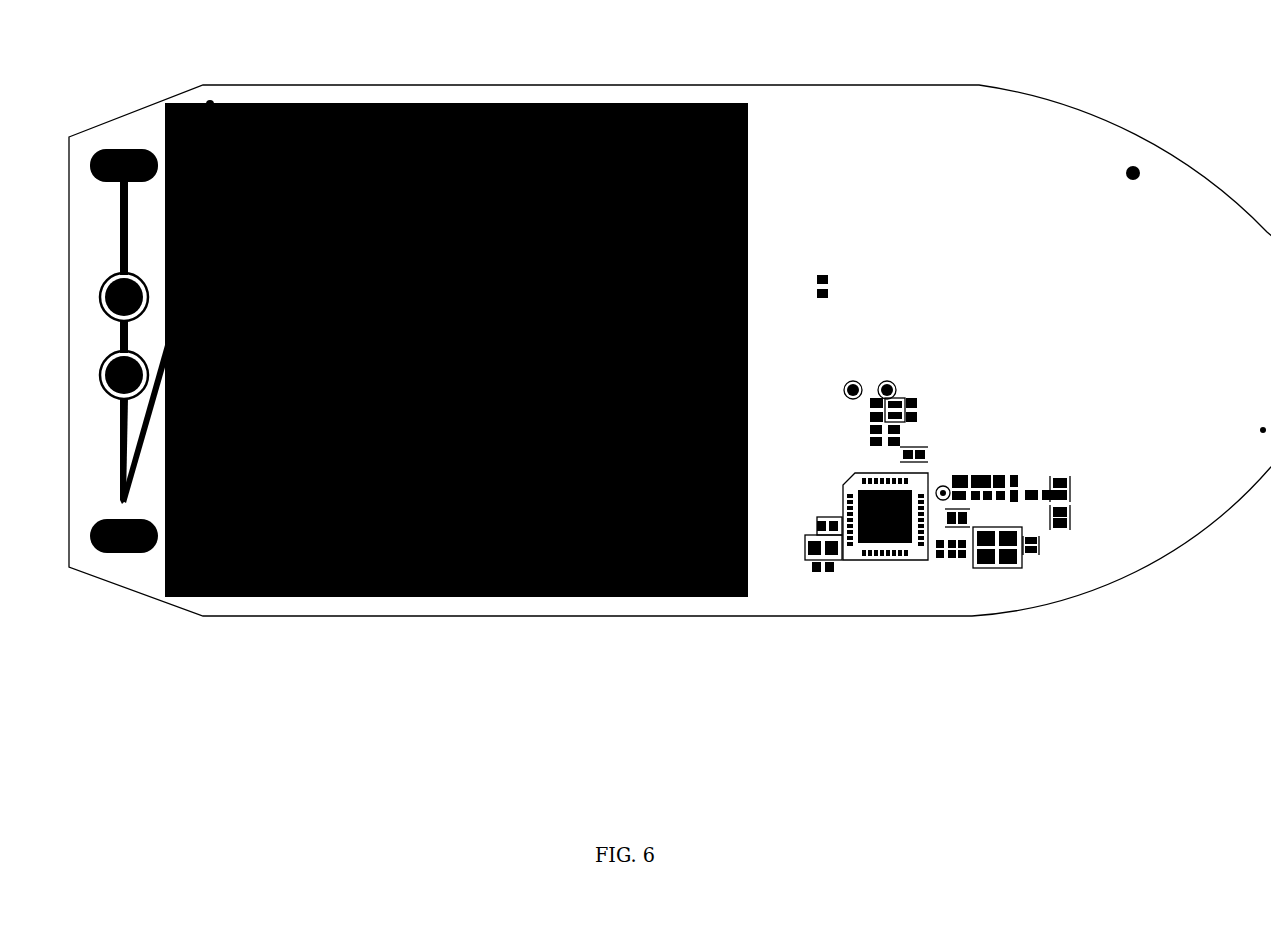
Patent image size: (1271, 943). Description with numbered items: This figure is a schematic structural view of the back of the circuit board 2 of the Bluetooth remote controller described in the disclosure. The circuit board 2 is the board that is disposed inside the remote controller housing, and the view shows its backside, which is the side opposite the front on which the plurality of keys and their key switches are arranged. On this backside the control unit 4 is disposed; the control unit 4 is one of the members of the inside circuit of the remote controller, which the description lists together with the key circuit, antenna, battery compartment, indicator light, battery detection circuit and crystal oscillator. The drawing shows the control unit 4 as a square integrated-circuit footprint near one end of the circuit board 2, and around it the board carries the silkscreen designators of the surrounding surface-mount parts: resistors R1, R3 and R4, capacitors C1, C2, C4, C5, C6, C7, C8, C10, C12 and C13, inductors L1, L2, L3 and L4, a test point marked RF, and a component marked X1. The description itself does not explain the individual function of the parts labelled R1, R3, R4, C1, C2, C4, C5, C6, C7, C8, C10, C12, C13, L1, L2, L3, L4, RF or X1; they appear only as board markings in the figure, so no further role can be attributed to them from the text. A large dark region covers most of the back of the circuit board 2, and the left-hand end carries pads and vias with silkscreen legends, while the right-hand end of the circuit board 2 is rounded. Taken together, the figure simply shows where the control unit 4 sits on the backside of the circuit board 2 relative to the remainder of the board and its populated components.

The circuit board 2 is at (670, 312).
The control unit 4 is at (887, 562).
The resistor R3 is at (817, 281).
The capacitor C1 is at (881, 435).
The capacitor C2 is at (876, 401).
The resistor R1 is at (909, 455).
The resistor R4 is at (906, 402).
The RF test point RF is at (943, 483).
The inductor L1 is at (1040, 501).
The inductor L2 is at (1041, 545).
The inductor L3 is at (971, 473).
The inductor L4 is at (994, 470).
The capacitor C4 is at (1014, 480).
The capacitor C5 is at (1068, 489).
The capacitor C6 is at (1068, 517).
The capacitor C7 is at (963, 517).
The capacitor C8 is at (830, 522).
The capacitor C10 is at (833, 568).
The capacitor C12 is at (951, 549).
The capacitor C13 is at (817, 547).
The crystal oscillator X1 is at (997, 553).